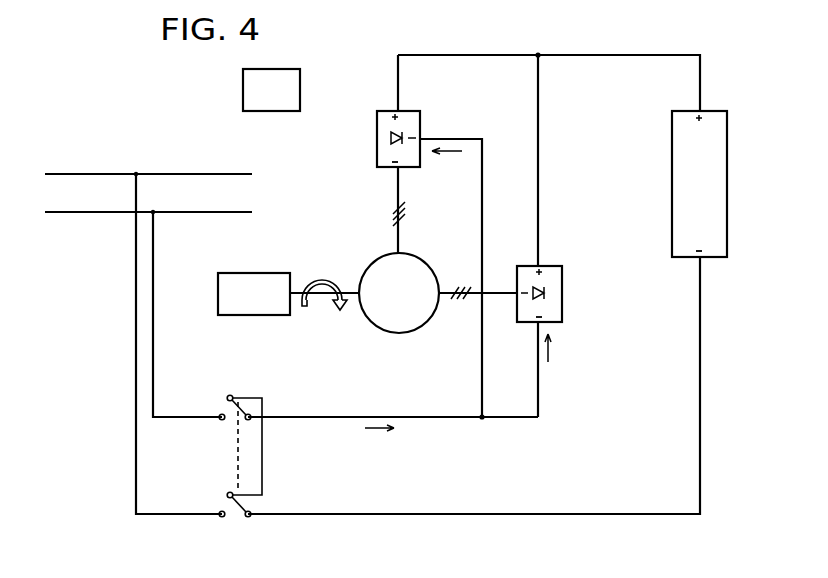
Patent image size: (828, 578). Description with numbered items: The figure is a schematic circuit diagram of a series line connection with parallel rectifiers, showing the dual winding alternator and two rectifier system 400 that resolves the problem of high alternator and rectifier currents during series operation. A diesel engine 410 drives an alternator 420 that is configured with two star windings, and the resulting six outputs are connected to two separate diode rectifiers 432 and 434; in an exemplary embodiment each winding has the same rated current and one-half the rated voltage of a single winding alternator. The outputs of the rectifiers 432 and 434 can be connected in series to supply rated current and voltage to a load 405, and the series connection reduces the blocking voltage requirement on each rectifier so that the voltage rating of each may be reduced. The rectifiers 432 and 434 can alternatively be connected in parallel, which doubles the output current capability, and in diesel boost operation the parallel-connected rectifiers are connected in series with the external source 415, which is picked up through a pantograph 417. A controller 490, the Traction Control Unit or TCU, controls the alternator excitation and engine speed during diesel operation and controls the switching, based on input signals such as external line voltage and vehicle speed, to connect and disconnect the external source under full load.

The dual winding alternator and two rectifier system 400 is at (97, 103).
The load 405 is at (707, 110).
The diesel engine 410 is at (254, 273).
The external source 415 is at (118, 142).
The pantograph 417 is at (63, 250).
The alternator 420 is at (412, 254).
The rectifier 432 is at (562, 277).
The rectifier 434 is at (420, 128).
The controller (TCU) 490 is at (300, 89).